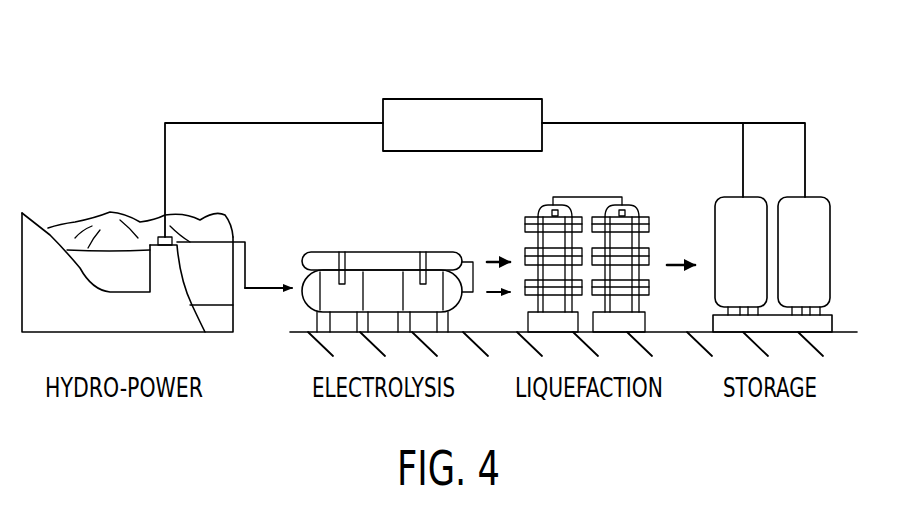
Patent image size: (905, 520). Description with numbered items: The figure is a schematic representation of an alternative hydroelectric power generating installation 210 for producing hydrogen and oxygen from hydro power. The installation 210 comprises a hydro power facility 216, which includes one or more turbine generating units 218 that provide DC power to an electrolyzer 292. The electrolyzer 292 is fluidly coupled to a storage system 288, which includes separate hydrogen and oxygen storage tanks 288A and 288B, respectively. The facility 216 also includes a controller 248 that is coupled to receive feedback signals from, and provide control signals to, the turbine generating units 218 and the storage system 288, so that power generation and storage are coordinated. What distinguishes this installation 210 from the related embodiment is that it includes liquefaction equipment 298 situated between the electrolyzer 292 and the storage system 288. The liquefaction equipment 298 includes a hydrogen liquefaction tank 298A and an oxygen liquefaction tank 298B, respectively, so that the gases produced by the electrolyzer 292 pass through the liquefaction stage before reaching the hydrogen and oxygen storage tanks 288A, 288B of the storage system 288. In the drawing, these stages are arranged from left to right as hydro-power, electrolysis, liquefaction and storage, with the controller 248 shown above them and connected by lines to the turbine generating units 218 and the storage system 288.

The hydroelectric power generating installation 210 is at (760, 96).
The hydro power facility 216 is at (92, 213).
The turbine generating units 218 is at (168, 235).
The controller 248 is at (462, 99).
The electrolyzer 292 is at (385, 249).
The liquefaction equipment 298 is at (589, 229).
The hydrogen liquefaction tank 298A is at (537, 210).
The oxygen liquefaction tank 298B is at (640, 210).
The storage system 288 is at (761, 234).
The hydrogen storage tank 288A is at (712, 207).
The oxygen storage tank 288B is at (828, 205).